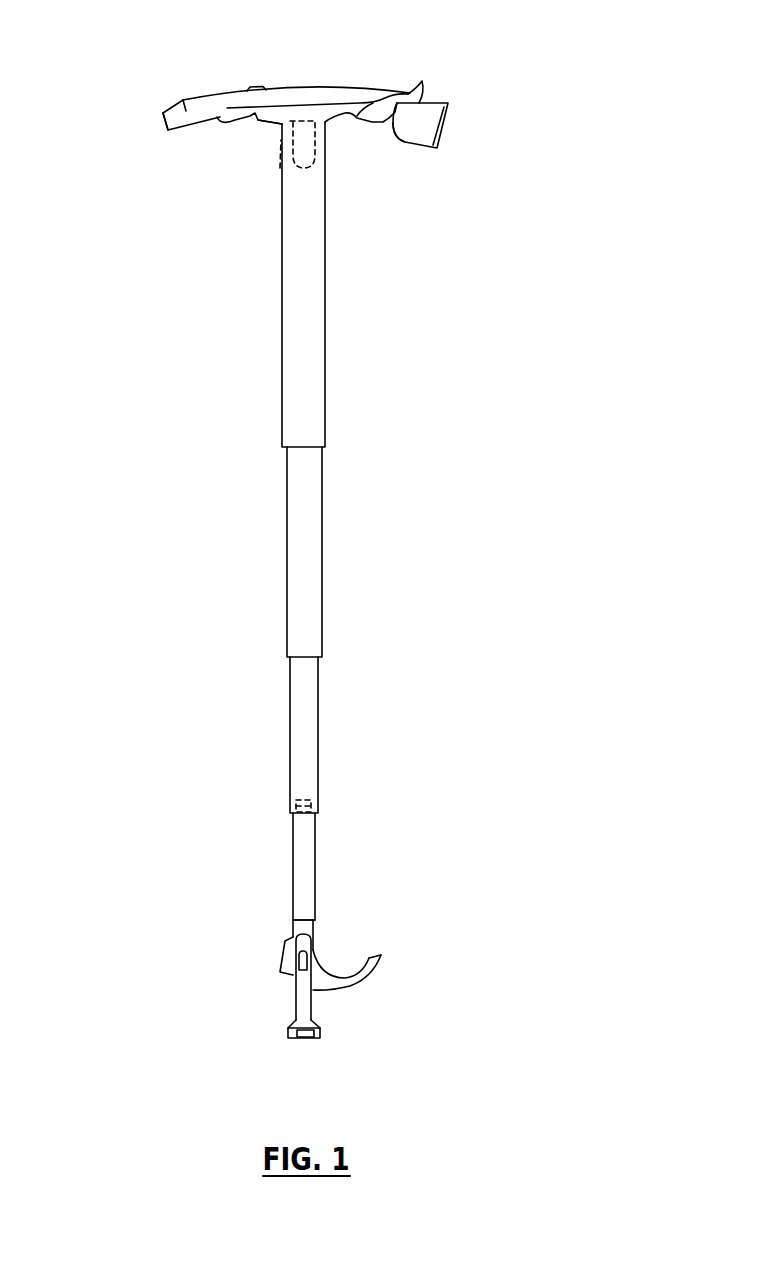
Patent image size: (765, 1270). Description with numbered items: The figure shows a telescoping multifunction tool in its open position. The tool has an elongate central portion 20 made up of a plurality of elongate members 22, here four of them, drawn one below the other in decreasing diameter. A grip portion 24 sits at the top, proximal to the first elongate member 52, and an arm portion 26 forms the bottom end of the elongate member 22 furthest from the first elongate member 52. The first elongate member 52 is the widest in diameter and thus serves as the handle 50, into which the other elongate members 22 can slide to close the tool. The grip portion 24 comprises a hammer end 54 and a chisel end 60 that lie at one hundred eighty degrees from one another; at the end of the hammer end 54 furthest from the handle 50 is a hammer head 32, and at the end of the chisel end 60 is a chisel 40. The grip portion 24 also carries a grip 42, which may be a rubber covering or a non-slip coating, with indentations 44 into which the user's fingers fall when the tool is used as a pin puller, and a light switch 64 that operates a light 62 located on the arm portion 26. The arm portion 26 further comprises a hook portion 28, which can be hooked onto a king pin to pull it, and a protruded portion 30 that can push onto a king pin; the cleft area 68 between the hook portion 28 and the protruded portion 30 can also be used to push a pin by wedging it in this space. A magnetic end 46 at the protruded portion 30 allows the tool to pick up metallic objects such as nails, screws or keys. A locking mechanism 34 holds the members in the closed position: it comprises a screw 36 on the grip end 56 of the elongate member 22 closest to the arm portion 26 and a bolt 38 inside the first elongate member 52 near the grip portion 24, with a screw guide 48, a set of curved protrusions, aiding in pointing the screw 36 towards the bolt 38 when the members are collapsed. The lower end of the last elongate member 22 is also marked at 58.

The elongate central portion 20 is at (398, 193).
The elongate members 22 is at (293, 393).
The grip portion 24 is at (205, 44).
The arm portion 26 is at (271, 938).
The hook portion 28 is at (363, 988).
The protruded portion 30 is at (322, 1033).
The hammer head 32 is at (450, 118).
The locking mechanism 34 is at (327, 126).
The screw 36 is at (287, 802).
The bolt 38 is at (282, 126).
The chisel 40 is at (162, 122).
The grip 42 is at (250, 124).
The indentations 44 is at (421, 89).
The magnetic end 46 is at (303, 1040).
The screw guide 48 is at (280, 168).
The handle 50 is at (293, 294).
The first elongate member 52 is at (312, 315).
The hammer end 54 is at (391, 126).
The grip end 56 is at (303, 816).
The lower segment end 58 is at (308, 905).
The chisel end 60 is at (183, 107).
The light 62 is at (282, 945).
The light switch 64 is at (250, 88).
The cleft area 68 is at (317, 1002).